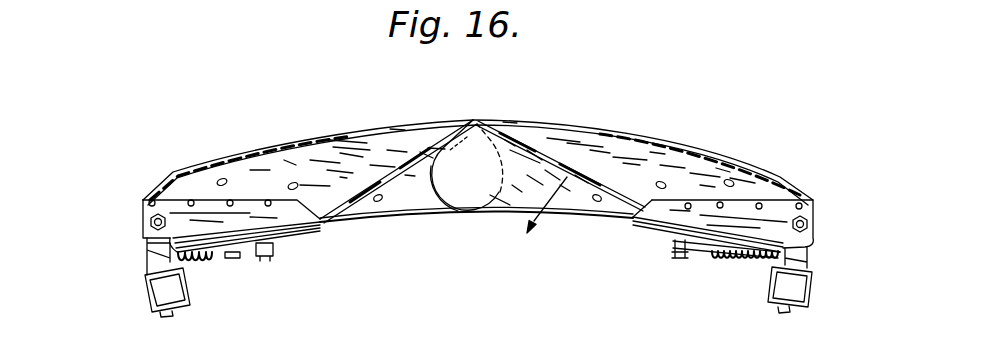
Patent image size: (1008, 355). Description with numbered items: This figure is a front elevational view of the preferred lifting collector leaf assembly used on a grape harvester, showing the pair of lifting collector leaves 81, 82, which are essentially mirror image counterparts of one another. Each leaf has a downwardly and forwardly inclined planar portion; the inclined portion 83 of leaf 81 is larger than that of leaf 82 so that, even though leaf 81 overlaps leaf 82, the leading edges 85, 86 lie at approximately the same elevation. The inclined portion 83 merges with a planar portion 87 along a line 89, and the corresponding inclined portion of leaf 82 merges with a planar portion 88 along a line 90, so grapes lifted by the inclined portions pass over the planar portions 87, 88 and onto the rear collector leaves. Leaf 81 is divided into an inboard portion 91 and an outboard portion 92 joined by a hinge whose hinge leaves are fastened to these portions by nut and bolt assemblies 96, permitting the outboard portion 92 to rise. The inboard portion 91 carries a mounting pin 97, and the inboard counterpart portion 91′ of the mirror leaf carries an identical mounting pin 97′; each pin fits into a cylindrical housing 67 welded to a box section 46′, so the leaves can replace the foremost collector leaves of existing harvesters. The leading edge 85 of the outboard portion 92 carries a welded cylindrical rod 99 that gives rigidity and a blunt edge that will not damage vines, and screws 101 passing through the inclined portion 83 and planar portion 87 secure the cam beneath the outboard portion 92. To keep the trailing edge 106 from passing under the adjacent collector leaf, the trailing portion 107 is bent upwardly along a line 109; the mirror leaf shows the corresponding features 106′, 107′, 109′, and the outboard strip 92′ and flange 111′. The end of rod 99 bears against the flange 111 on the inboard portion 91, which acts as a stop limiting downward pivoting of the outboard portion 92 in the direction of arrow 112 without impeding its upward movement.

The box section 46′ is at (147, 280).
The cylindrical housing 67 is at (163, 295).
The lifting collector leaf 81 is at (545, 127).
The lifting collector leaf 82 is at (363, 133).
The downwardly and forwardly inclined planar portion 83 is at (507, 198).
The leading edge 85 is at (552, 216).
The leading edge 86 is at (423, 213).
The planar portion 87 is at (527, 130).
The planar portion 88 is at (398, 130).
The line 89 is at (510, 124).
The line 90 is at (427, 155).
The inboard portion 91 is at (813, 208).
The inboard counterpart portion 91′ is at (147, 210).
The outboard portion 92 is at (583, 132).
The left reinforcing strip 92′ is at (380, 132).
The nut and bolt assemblies 96 is at (189, 200).
The mounting pin 97 is at (817, 225).
The mounting pin 97′ is at (150, 224).
The cylindrical rod 99 is at (360, 219).
The screws 101 is at (290, 184).
The trailing edge 106 is at (722, 166).
The left hole 106′ is at (218, 199).
The trailing portion 107 is at (758, 203).
The left hole 107′ is at (231, 200).
The line 109 is at (727, 181).
The left hole 109′ is at (290, 163).
The flange 111 is at (655, 230).
The left clamp bar 111′ is at (290, 236).
The arrow 112 is at (510, 216).